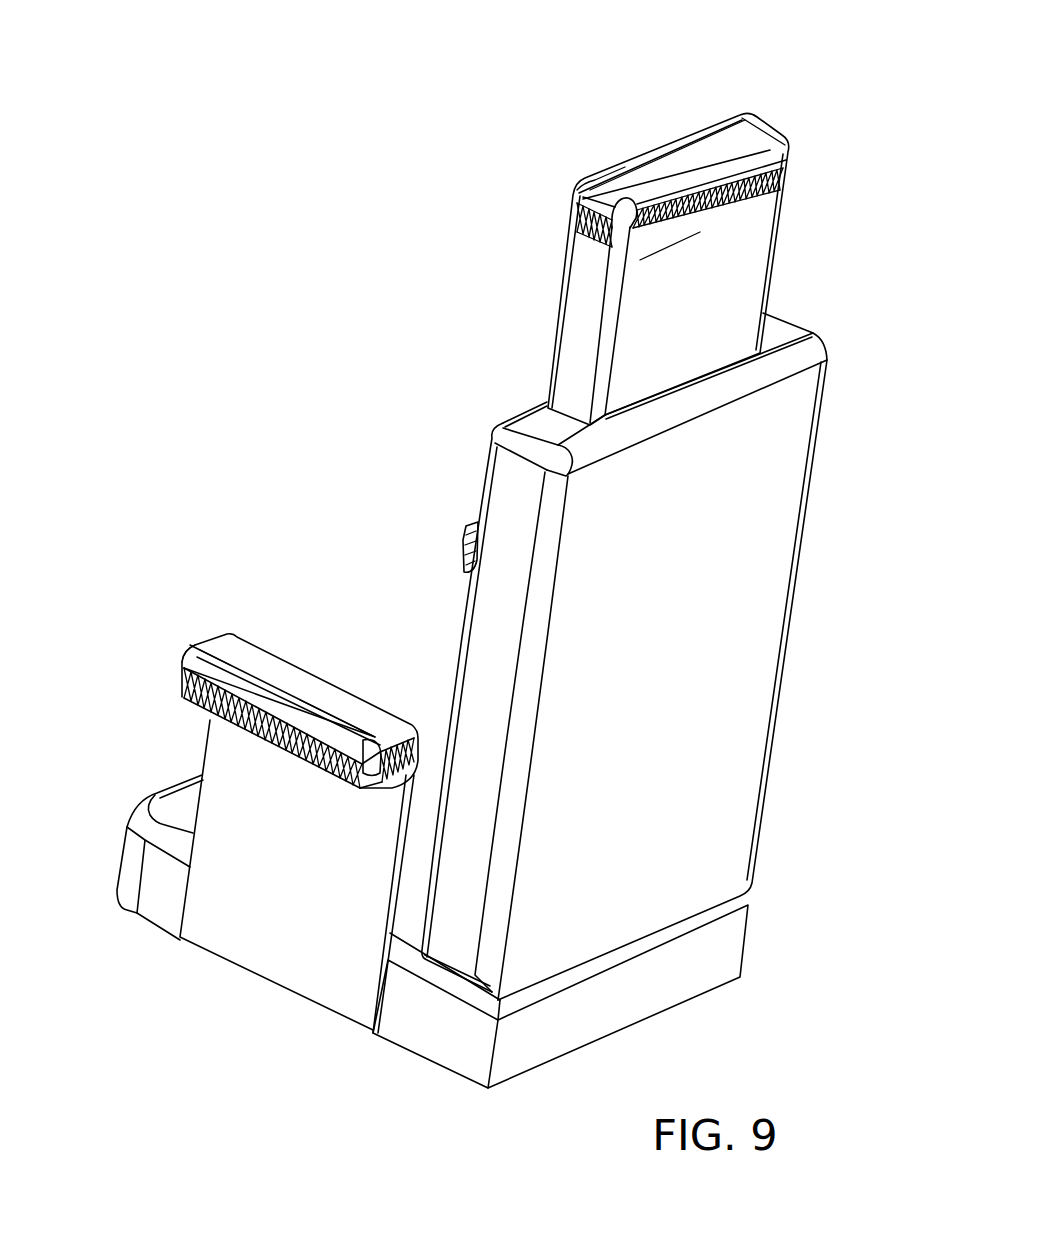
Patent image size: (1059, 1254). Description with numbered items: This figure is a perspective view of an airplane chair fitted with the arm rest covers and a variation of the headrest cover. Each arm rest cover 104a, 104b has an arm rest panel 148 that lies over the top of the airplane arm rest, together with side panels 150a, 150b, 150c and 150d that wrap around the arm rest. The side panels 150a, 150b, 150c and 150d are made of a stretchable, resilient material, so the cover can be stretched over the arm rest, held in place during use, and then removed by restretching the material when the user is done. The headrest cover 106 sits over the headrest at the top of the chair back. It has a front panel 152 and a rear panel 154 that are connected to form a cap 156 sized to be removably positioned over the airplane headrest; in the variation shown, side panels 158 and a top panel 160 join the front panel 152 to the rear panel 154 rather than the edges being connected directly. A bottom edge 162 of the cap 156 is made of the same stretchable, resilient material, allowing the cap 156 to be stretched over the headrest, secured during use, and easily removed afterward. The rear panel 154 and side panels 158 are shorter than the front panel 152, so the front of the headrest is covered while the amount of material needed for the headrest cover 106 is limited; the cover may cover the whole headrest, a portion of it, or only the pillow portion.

The arm rest cover 104a is at (228, 650).
The arm rest cover 104b is at (462, 551).
The headrest cover 106 is at (765, 122).
The arm rest panel 148 is at (236, 647).
The side panel 150a is at (185, 665).
The side panel 150b is at (228, 728).
The side panel 150c is at (418, 772).
The side panel 150d is at (352, 690).
The front panel 152 is at (658, 222).
The rear panel 154 is at (788, 188).
The cap 156 is at (618, 163).
The side panels 158 is at (620, 240).
The top panel 160 is at (690, 150).
The bottom edge 162 is at (697, 223).